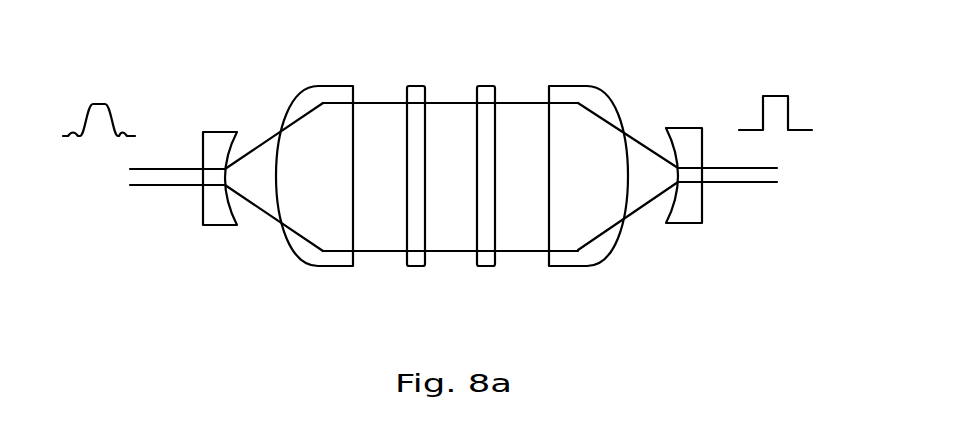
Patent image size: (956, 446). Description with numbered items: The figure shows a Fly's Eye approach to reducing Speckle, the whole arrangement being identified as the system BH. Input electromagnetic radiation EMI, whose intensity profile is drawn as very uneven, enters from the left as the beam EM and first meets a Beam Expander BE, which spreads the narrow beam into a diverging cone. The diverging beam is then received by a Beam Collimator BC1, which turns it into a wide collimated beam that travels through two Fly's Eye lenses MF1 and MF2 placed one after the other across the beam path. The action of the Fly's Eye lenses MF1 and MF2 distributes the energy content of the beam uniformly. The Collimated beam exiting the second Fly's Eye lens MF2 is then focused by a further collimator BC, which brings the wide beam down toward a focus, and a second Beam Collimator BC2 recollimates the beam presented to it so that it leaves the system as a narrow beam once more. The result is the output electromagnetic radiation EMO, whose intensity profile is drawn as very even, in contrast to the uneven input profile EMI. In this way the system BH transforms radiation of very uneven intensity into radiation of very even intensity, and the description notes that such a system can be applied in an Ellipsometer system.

The input electromagnetic radiation EMI is at (99, 105).
The electromagnetic beam EM is at (158, 192).
The Beam Expander BE is at (217, 235).
The Beam Collimator BC1 is at (332, 272).
The Fly's Eye lens MF1 is at (415, 82).
The Fly's Eye lens MF2 is at (493, 273).
The Beam Collimator BC is at (571, 82).
The second Beam Collimator BC2 is at (687, 230).
The Fly's Eye system BH is at (693, 53).
The output electromagnetic radiation EMO is at (745, 124).